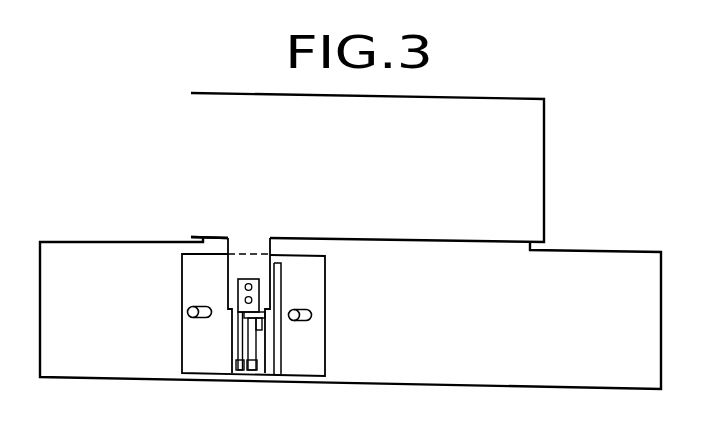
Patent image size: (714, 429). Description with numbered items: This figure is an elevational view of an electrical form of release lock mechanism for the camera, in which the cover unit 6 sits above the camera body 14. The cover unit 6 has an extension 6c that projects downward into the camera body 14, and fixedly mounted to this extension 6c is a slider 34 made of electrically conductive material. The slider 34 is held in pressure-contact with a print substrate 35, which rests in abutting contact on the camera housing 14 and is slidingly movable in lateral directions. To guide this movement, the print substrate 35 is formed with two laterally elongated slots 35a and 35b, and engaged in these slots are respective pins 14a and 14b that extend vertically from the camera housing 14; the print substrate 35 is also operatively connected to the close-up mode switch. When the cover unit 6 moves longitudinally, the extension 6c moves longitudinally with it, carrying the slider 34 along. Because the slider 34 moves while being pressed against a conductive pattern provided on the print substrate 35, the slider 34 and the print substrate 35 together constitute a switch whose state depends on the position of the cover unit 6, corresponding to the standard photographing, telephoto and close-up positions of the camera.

The cover unit 6 is at (531, 138).
The extension 6c is at (232, 267).
The camera body 14 is at (612, 266).
The pin 14a is at (188, 312).
The pin 14b is at (296, 312).
The slider 34 is at (238, 345).
The print substrate 35 is at (307, 349).
The laterally elongated slot 35a is at (205, 320).
The laterally elongated slot 35b is at (308, 322).